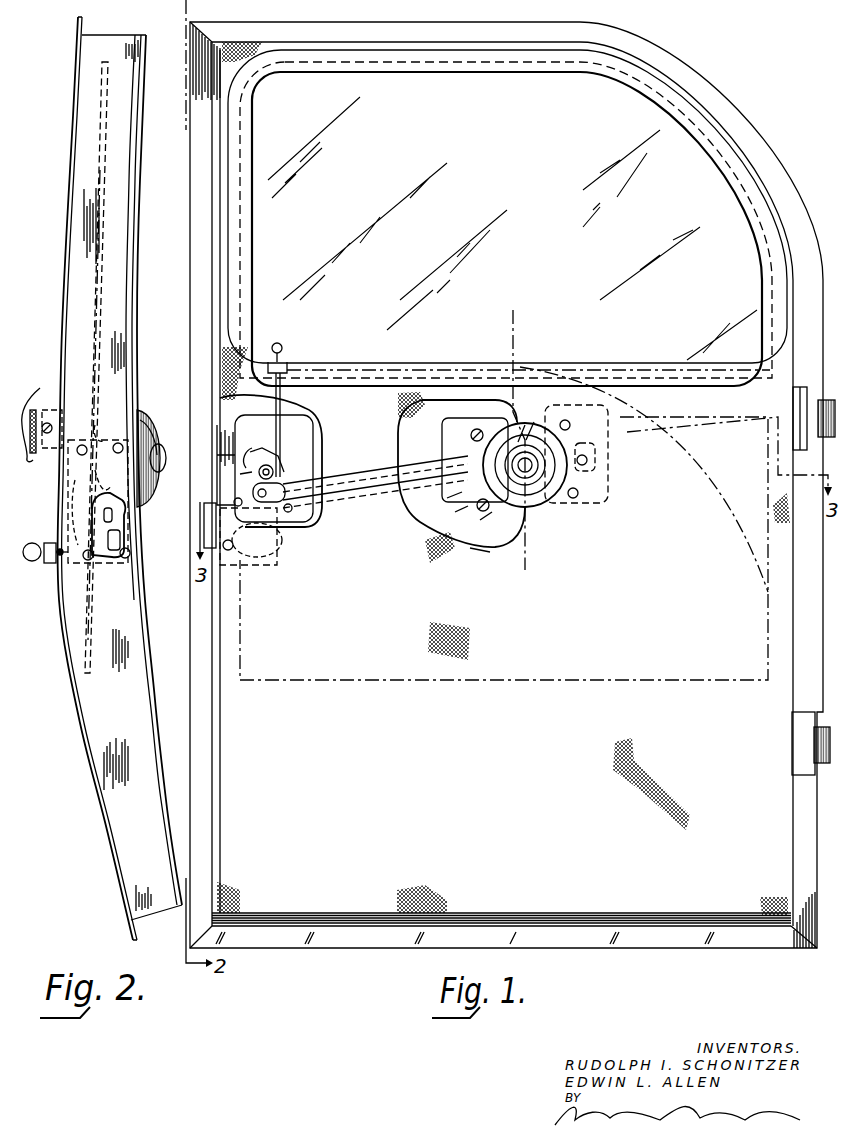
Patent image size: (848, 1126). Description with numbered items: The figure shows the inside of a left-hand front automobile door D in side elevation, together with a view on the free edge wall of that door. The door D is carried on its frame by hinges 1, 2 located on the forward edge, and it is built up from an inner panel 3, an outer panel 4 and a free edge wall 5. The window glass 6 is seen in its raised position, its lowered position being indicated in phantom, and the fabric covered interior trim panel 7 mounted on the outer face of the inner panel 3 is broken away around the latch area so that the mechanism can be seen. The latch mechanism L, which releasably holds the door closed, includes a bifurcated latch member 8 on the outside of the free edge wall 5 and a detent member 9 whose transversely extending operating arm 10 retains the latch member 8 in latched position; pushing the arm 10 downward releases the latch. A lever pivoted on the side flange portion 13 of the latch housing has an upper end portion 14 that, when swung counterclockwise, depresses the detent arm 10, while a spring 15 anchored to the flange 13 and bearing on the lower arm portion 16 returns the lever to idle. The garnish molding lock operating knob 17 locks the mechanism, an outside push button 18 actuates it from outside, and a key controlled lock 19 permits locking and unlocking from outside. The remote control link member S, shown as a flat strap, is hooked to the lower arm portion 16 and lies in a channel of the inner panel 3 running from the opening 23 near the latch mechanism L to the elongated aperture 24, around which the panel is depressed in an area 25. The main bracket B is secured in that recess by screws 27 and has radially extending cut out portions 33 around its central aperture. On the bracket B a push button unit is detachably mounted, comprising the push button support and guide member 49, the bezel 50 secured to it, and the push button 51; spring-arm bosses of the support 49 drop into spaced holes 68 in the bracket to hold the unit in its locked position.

In FIG. 1, the door D is at (383, 952).
In FIG. 1, the hinge 1 is at (823, 408).
In FIG. 1, the hinge 2 is at (826, 765).
In FIG. 1, the inner panel 3 is at (480, 548).
In FIG. 2, the inner panel 3 is at (148, 683).
In FIG. 1, the outer panel 4 is at (545, 570).
In FIG. 2, the outer panel 4 is at (92, 722).
In FIG. 2, the free edge wall 5 is at (117, 822).
In FIG. 1, the window glass 6 is at (551, 718).
In FIG. 2, the window glass 6 is at (105, 182).
In FIG. 1, the interior trim panel 7 is at (559, 726).
In FIG. 2, the interior trim panel 7 is at (147, 597).
In FIG. 2, the latch member 8 is at (115, 527).
In FIG. 2, the detent member 9 is at (90, 457).
In FIG. 1, the operating arm 10 is at (240, 474).
In FIG. 2, the operating arm 10 is at (98, 422).
In FIG. 1, the side flange portion 13 is at (244, 460).
In FIG. 1, the upper end portion 14 is at (271, 463).
In FIG. 1, the spring 15 is at (288, 470).
In FIG. 1, the lower arm portion 16 is at (300, 482).
In FIG. 1, the lock operating knob 17 is at (283, 351).
In FIG. 2, the push button 18 is at (24, 425).
In FIG. 2, the key controlled lock 19 is at (50, 566).
In FIG. 1, the opening 23 is at (290, 522).
In FIG. 1, the elongated aperture 24 is at (450, 505).
In FIG. 1, the depressed area 25 is at (455, 517).
In FIG. 1, the screws 27 is at (483, 508).
In FIG. 1, the cut out portion 33 is at (490, 458).
In FIG. 1, the push button support and guide member 49 is at (540, 457).
In FIG. 2, the push button support and guide member 49 is at (150, 405).
In FIG. 1, the bezel 50 is at (572, 462).
In FIG. 2, the bezel 50 is at (143, 412).
In FIG. 1, the push button 51 is at (572, 477).
In FIG. 2, the push button 51 is at (160, 470).
In FIG. 1, the holes 68 is at (534, 422).
In FIG. 1, the main bracket B is at (445, 545).
In FIG. 1, the latch mechanism L is at (222, 456).
In FIG. 1, the link member S is at (300, 500).